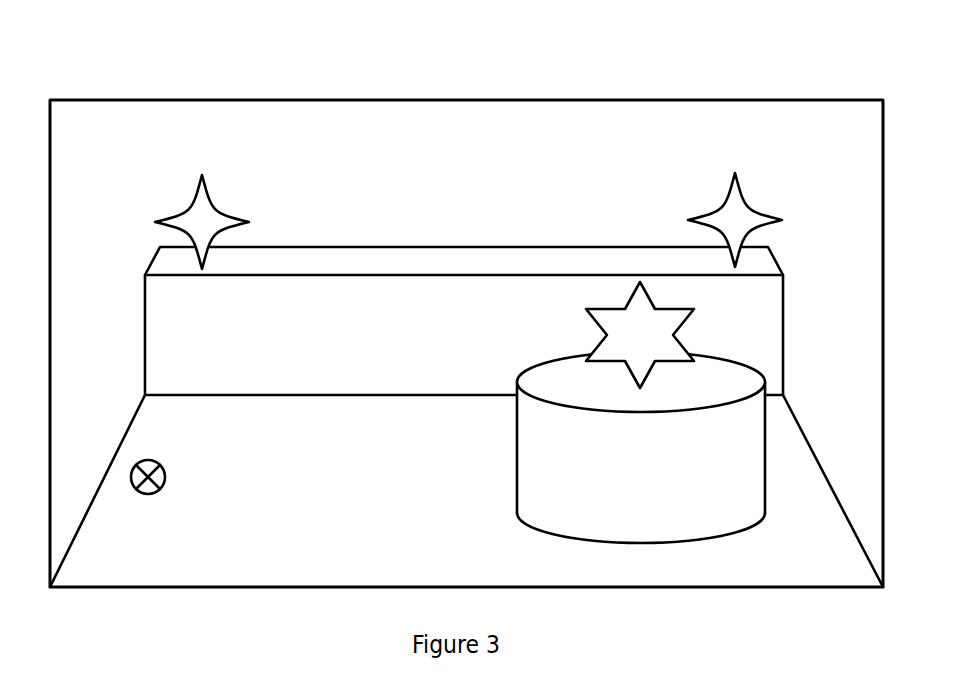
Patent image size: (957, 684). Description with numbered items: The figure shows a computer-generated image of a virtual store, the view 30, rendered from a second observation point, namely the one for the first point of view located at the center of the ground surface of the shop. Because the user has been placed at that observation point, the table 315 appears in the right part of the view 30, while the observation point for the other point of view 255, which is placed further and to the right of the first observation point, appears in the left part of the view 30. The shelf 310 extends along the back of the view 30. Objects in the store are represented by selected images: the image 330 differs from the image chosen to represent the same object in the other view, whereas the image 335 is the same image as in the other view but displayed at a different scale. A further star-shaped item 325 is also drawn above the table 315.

The view 30 is at (256, 88).
The shelf 310 is at (183, 318).
The table 315 is at (537, 458).
The star-shaped object 325 is at (620, 330).
The image 330 is at (734, 216).
The image 335 is at (203, 225).
The point of view 255 is at (157, 465).